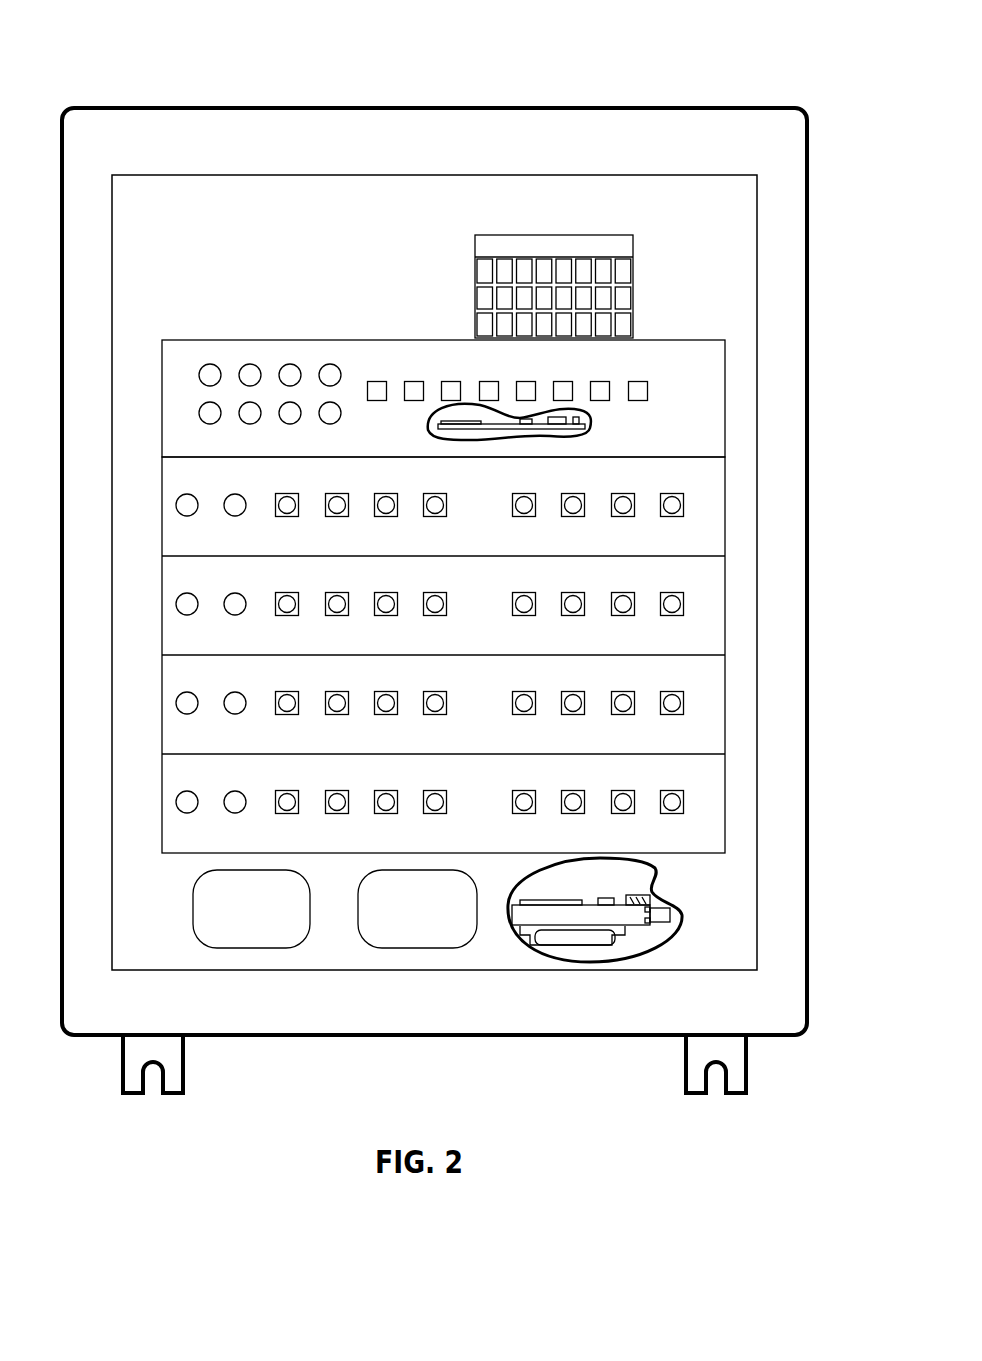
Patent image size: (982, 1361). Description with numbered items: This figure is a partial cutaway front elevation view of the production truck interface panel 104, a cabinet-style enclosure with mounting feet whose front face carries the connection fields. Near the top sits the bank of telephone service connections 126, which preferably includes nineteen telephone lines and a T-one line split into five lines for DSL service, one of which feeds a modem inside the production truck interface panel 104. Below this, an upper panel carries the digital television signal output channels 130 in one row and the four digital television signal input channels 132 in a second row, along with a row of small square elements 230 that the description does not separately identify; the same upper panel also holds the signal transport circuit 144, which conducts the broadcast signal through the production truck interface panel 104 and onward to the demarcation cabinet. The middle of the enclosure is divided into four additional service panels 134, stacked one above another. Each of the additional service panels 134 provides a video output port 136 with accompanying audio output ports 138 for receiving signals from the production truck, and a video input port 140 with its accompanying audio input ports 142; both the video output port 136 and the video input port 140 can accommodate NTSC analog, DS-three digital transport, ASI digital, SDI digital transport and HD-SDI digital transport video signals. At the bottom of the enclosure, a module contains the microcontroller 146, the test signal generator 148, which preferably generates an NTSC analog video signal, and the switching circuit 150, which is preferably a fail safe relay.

The production truck interface panel 104 is at (254, 44).
The bank of telephone service connections 126 is at (642, 283).
The digital television signal output channels 130 is at (185, 375).
The digital television signal input channels 132 is at (185, 413).
The additional service panels 134 is at (725, 853).
The video output port 136 is at (176, 507).
The audio output ports 138 is at (364, 524).
The video input port 140 is at (226, 612).
The audio input ports 142 is at (595, 627).
The signal transport circuit 144 is at (592, 433).
The microcontroller 146 is at (590, 903).
The test signal generator 148 is at (512, 915).
The switching circuit 150 is at (672, 924).
The row of switches 230 is at (662, 393).